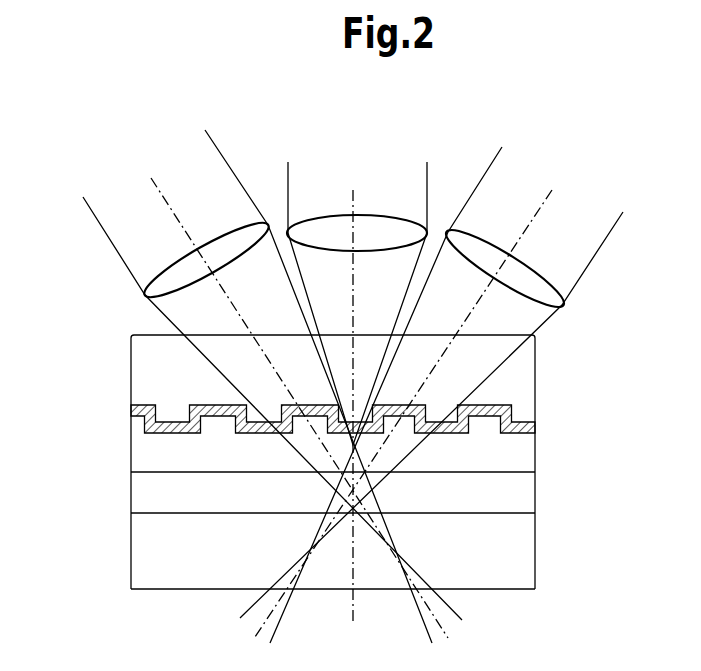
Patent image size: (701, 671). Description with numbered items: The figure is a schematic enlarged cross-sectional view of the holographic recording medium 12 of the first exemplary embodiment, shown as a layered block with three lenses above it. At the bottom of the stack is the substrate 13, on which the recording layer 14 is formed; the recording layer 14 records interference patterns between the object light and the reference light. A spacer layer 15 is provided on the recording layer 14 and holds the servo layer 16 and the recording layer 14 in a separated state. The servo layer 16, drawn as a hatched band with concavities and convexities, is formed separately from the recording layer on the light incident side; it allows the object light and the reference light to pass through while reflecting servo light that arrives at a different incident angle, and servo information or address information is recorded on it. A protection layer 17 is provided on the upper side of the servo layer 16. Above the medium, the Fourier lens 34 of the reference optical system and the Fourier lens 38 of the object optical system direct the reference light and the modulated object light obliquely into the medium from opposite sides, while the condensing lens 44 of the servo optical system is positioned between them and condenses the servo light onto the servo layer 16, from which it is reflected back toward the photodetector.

The holographic recording medium 12 is at (118, 425).
The substrate 13 is at (523, 563).
The recording layer 14 is at (523, 502).
The spacer layer 15 is at (523, 460).
The servo layer 16 is at (543, 407).
The protection layer 17 is at (528, 371).
The Fourier lens 34 is at (530, 275).
The Fourier lens 38 is at (168, 277).
The condensing lens 44 is at (392, 225).